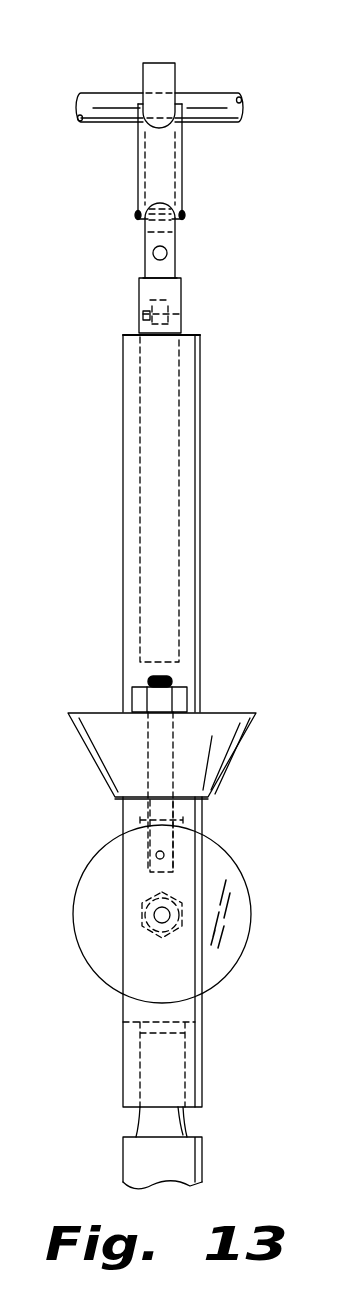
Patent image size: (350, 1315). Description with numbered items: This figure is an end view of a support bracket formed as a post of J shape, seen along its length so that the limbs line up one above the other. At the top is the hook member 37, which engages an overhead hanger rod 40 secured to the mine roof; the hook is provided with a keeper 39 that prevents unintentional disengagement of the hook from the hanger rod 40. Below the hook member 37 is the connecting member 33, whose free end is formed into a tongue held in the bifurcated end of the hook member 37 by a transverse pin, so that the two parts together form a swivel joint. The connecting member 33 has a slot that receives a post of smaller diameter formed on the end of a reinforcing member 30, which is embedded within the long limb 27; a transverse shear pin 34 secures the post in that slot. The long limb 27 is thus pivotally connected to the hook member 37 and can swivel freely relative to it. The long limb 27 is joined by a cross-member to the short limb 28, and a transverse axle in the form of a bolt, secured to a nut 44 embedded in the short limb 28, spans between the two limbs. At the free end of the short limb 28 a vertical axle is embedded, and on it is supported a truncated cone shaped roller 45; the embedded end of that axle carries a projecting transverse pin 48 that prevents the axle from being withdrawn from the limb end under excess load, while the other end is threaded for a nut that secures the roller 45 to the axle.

The long limb 27 is at (123, 511).
The short limb 28 is at (123, 1058).
The reinforcing member 30 is at (157, 436).
The connecting member 33 is at (183, 288).
The transverse shear pin 34 is at (140, 316).
The hook member 37 is at (145, 72).
The keeper 39 is at (138, 160).
The overhead hanger rod 40 is at (215, 100).
The nut 44 is at (140, 916).
The truncated cone shaped roller 45 is at (102, 720).
The projecting transverse pin 48 is at (158, 855).